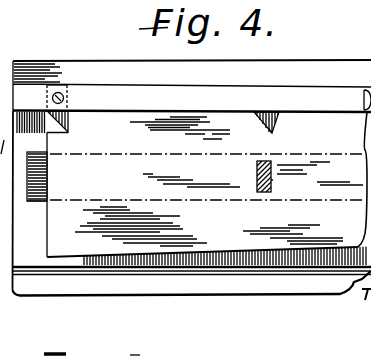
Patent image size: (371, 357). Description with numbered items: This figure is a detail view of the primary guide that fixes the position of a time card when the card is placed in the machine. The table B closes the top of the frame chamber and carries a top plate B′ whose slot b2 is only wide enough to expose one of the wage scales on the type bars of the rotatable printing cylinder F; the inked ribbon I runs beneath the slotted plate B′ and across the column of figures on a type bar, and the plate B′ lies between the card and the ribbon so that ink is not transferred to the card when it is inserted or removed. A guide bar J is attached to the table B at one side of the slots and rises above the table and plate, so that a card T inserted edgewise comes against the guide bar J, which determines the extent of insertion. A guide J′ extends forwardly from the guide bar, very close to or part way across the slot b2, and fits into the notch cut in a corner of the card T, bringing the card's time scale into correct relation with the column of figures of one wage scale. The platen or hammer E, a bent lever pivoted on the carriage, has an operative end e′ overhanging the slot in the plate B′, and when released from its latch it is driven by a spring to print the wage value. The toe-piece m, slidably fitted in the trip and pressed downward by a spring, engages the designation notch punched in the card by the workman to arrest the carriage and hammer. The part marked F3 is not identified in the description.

The guide bar J is at (328, 95).
The guide J′ is at (67, 110).
The printing cylinder F is at (68, 130).
The wedge F3 is at (278, 113).
The toe-piece m is at (274, 129).
The ribbon I is at (48, 184).
The slot b2 is at (33, 202).
The time card T is at (207, 188).
The platen E is at (257, 171).
The operative end of the hammer e′ is at (271, 180).
The table B is at (225, 288).
The plate B′ is at (328, 262).